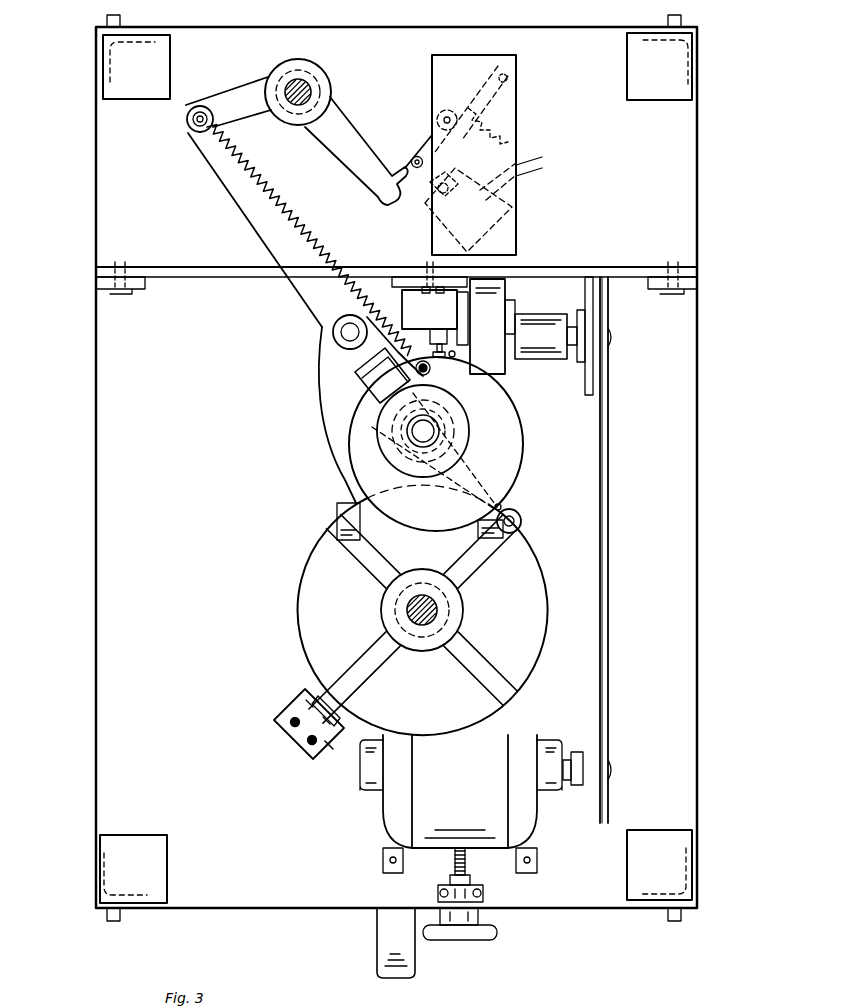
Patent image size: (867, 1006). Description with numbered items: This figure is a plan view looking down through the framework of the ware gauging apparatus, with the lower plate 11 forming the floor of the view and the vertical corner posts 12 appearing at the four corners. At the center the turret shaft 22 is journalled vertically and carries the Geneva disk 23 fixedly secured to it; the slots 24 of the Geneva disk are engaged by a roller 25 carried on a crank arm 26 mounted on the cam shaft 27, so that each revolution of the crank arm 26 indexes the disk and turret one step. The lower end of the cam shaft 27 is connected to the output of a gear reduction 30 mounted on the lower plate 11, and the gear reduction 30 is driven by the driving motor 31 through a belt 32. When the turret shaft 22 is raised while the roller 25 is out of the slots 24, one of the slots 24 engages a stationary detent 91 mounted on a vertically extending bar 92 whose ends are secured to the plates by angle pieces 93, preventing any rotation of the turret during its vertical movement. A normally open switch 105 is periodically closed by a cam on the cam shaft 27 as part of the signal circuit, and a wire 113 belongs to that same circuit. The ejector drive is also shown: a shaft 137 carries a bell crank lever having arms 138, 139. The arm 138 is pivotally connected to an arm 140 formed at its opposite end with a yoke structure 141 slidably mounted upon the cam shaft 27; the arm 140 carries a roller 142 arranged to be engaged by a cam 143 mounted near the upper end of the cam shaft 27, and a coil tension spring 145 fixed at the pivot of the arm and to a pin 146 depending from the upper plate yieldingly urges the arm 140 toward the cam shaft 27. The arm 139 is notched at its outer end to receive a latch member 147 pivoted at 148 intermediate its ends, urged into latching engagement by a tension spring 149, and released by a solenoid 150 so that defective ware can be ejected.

The lower plate 11 is at (396, 468).
The vertical corner posts 12 is at (683, 72).
The shaft 22 is at (437, 606).
The Geneva disk 23 is at (423, 610).
The slots 24 is at (363, 687).
The roller 25 is at (518, 515).
The crank arm 26 is at (501, 505).
The shaft 27 is at (432, 427).
The gear reduction 30 is at (531, 336).
The driving motor 31 is at (471, 837).
The belt 32 is at (604, 620).
The stationary detent 91 is at (335, 687).
The vertically extending bar 92 is at (307, 692).
The angle pieces 93 is at (317, 748).
The normally open switch 105 is at (430, 309).
The wire 113 is at (380, 933).
The shaft 137 is at (312, 86).
The arm 138 is at (245, 123).
The arm 139 is at (352, 140).
The arm 140 is at (262, 227).
The yoke structure 141 is at (330, 393).
The roller 142 is at (334, 338).
The cam 143 is at (436, 444).
The coil tension spring 145 is at (285, 200).
The pin 146 is at (432, 369).
The latch member 147 is at (413, 160).
The pivot 148 is at (440, 112).
The tension spring 149 is at (493, 107).
The solenoid 150 is at (442, 220).